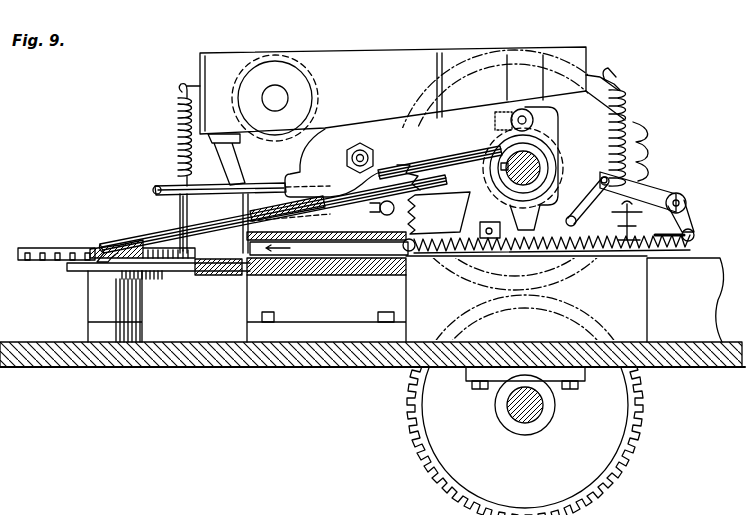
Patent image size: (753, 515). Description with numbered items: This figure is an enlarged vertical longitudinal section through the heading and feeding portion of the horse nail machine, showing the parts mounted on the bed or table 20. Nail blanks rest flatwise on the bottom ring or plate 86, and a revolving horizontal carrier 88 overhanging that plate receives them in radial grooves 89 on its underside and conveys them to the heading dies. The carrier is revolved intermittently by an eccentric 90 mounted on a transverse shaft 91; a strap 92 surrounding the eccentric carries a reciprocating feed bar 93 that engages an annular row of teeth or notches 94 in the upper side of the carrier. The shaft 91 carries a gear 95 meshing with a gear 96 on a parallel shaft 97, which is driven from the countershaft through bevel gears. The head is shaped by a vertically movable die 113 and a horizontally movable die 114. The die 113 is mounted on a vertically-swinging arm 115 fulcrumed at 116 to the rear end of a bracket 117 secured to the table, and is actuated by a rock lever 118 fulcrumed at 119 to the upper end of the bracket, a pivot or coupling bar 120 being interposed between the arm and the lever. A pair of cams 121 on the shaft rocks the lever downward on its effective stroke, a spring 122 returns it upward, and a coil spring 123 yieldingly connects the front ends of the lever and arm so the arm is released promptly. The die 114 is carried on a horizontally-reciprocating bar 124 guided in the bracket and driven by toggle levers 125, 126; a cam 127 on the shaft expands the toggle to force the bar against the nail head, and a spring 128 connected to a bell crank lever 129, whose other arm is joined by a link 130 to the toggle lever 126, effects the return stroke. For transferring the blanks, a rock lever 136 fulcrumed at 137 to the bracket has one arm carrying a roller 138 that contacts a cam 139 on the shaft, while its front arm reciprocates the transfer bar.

The bed or table 20 is at (190, 362).
The bottom ring or plate 86 is at (225, 257).
The revolving horizontal carrier 88 is at (32, 252).
The radial grooves 89 is at (56, 263).
The eccentric 90 is at (478, 157).
The transverse shaft 91 is at (545, 163).
The strap 92 is at (464, 192).
The reciprocating feed bar 93 is at (143, 234).
The teeth or notches 94 is at (124, 241).
The gear 95 is at (648, 148).
The gear 96 is at (644, 421).
The parallel shaft 97 is at (537, 415).
The vertically movable die 113 is at (230, 276).
The horizontally movable die 114 is at (326, 300).
The vertically-swinging arm 115 is at (214, 223).
The fulcrum 116 is at (380, 208).
The bracket 117 is at (326, 268).
The rock lever 118 is at (393, 90).
The fulcrum 119 is at (272, 98).
The pivot or coupling bar 120 is at (238, 165).
The cams 121 is at (559, 125).
The spring 122 is at (632, 105).
The coil spring 123 is at (178, 134).
The horizontally-reciprocating bar 124 is at (329, 248).
The toggle lever 125 is at (474, 238).
The toggle lever 126 is at (578, 233).
The cam 127 is at (600, 182).
The spring 128 is at (462, 259).
The bell crank lever 129 is at (688, 212).
The link 130 is at (644, 185).
The rock lever 136 is at (166, 184).
The fulcrum 137 is at (376, 157).
The roller 138 is at (524, 110).
The cam 139 is at (506, 183).